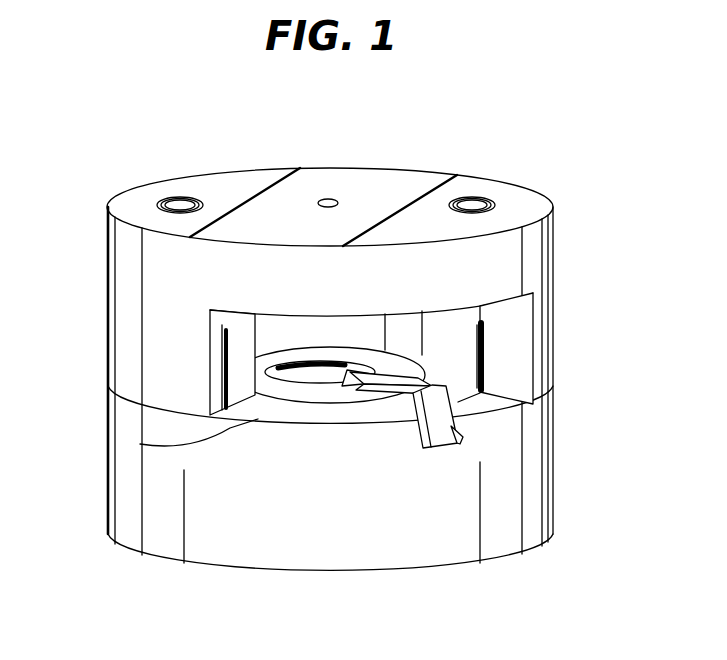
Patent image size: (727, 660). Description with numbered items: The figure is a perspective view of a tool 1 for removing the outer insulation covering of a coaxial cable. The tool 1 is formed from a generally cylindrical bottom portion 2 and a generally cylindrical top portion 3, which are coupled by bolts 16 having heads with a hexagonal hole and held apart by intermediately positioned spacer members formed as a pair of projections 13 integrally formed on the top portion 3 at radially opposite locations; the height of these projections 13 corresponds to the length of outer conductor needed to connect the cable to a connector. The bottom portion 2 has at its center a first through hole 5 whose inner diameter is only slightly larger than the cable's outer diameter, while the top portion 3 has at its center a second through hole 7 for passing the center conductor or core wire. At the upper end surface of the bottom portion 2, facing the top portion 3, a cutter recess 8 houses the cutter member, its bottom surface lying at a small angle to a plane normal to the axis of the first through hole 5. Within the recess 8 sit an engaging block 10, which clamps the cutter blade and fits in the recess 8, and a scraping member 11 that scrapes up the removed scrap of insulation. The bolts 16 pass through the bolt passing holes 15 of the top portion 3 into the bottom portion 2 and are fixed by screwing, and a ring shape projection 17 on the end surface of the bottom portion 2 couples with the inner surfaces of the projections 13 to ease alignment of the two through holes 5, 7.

The tool 1 is at (164, 170).
The bottom portion 2 is at (130, 481).
The top portion 3 is at (397, 180).
The first through hole 5 is at (315, 378).
The second through hole 7 is at (328, 199).
The cutter recess 8 is at (460, 438).
The engaging block 10 is at (470, 395).
The scraping member 11 is at (376, 361).
The projections 13 is at (132, 328).
The bolt passing holes 15 is at (203, 198).
The bolts 16 is at (165, 197).
The ring shape projection 17 is at (140, 444).